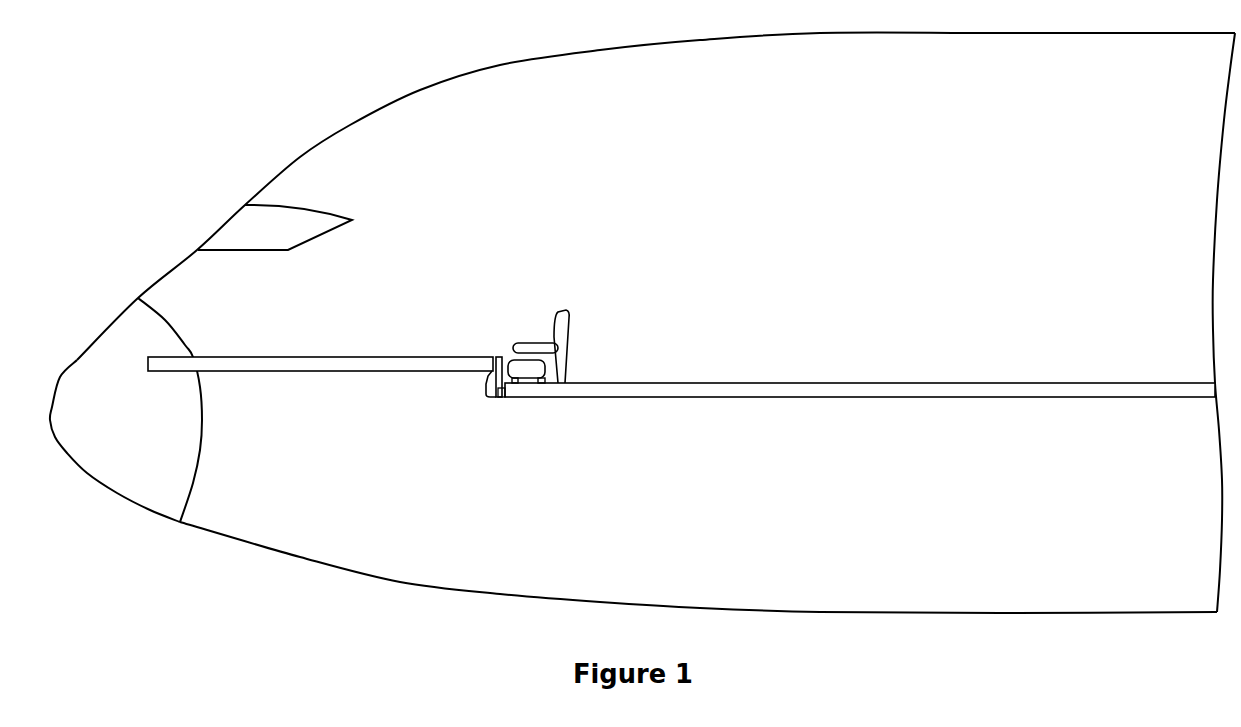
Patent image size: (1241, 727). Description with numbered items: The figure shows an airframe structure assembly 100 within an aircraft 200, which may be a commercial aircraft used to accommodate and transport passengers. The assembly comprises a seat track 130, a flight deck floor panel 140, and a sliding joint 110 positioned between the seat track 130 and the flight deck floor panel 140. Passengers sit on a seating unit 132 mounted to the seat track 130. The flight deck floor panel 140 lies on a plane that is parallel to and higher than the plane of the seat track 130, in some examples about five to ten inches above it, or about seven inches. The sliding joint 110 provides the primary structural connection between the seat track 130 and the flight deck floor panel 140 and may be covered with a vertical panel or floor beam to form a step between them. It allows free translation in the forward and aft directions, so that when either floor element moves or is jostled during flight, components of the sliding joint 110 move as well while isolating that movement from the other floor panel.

The aircraft 200 is at (633, 184).
The airframe structure assembly 100 is at (681, 365).
The flight deck floor panel 140 is at (375, 357).
The seat track 130 is at (528, 400).
The seating unit 132 is at (567, 366).
The sliding joint 110 is at (485, 383).